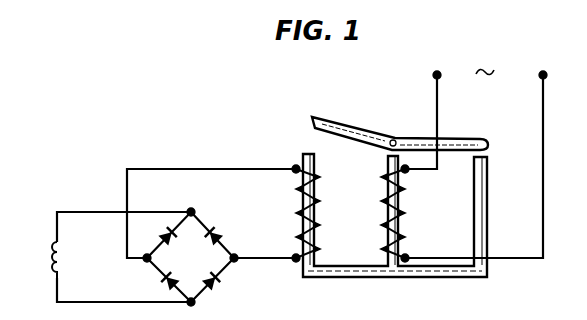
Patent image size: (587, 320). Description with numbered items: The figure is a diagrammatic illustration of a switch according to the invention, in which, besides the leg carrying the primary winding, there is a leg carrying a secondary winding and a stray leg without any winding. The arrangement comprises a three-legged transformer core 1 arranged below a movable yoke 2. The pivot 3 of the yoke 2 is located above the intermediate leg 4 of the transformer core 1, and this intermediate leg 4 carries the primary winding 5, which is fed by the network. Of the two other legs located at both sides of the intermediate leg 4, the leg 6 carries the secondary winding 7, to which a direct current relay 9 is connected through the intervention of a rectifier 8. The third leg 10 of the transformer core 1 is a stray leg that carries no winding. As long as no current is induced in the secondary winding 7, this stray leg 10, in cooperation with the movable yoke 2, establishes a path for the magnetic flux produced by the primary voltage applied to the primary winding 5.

The three-legged transformer core 1 is at (360, 271).
The movable yoke 2 is at (333, 124).
The pivot 3 is at (394, 138).
The intermediate leg 4 is at (387, 159).
The primary winding 5 is at (404, 214).
The leg 6 is at (302, 163).
The secondary winding 7 is at (316, 199).
The rectifier 8 is at (223, 270).
The direct current relay 9 is at (53, 247).
The third leg 10 is at (483, 210).